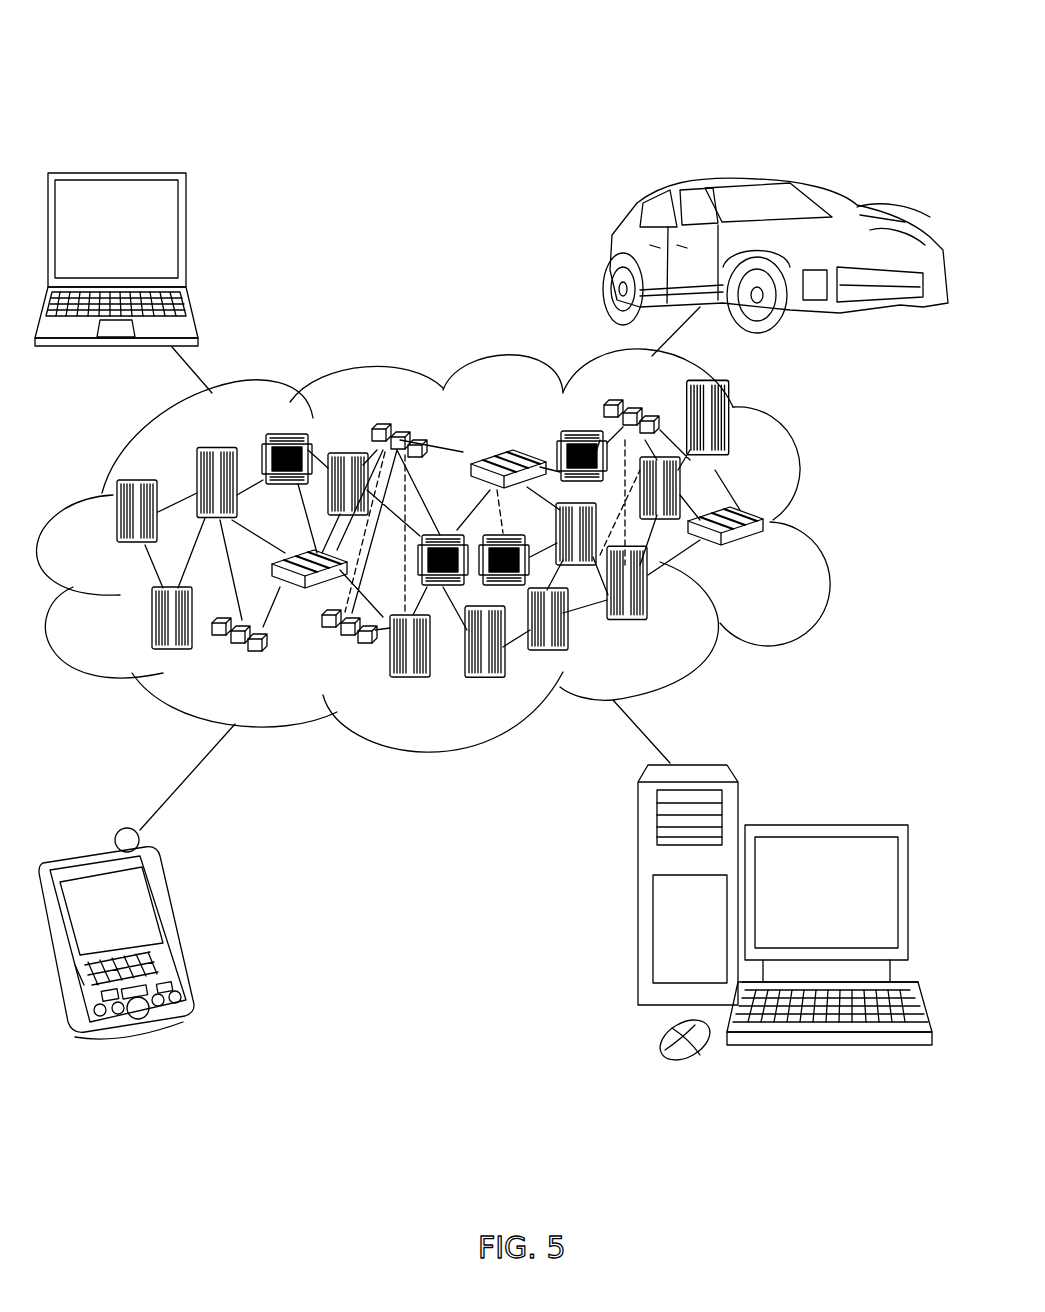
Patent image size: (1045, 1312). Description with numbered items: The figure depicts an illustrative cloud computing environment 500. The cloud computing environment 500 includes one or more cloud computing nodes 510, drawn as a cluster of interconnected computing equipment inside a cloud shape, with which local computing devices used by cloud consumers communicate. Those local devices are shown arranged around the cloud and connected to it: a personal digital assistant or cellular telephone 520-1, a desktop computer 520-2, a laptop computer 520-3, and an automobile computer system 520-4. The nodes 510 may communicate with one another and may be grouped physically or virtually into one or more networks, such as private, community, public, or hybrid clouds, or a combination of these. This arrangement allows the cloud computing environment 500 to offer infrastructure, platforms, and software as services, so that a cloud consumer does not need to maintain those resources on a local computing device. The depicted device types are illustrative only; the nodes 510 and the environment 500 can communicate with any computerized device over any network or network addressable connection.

The cloud computing environment 500 is at (767, 34).
The cloud computing nodes 510 is at (767, 553).
The personal digital assistant (PDA) or cellular telephone 520-1 is at (175, 917).
The desktop computer 520-2 is at (837, 803).
The laptop computer 520-3 is at (187, 238).
The automobile computer system 520-4 is at (605, 243).